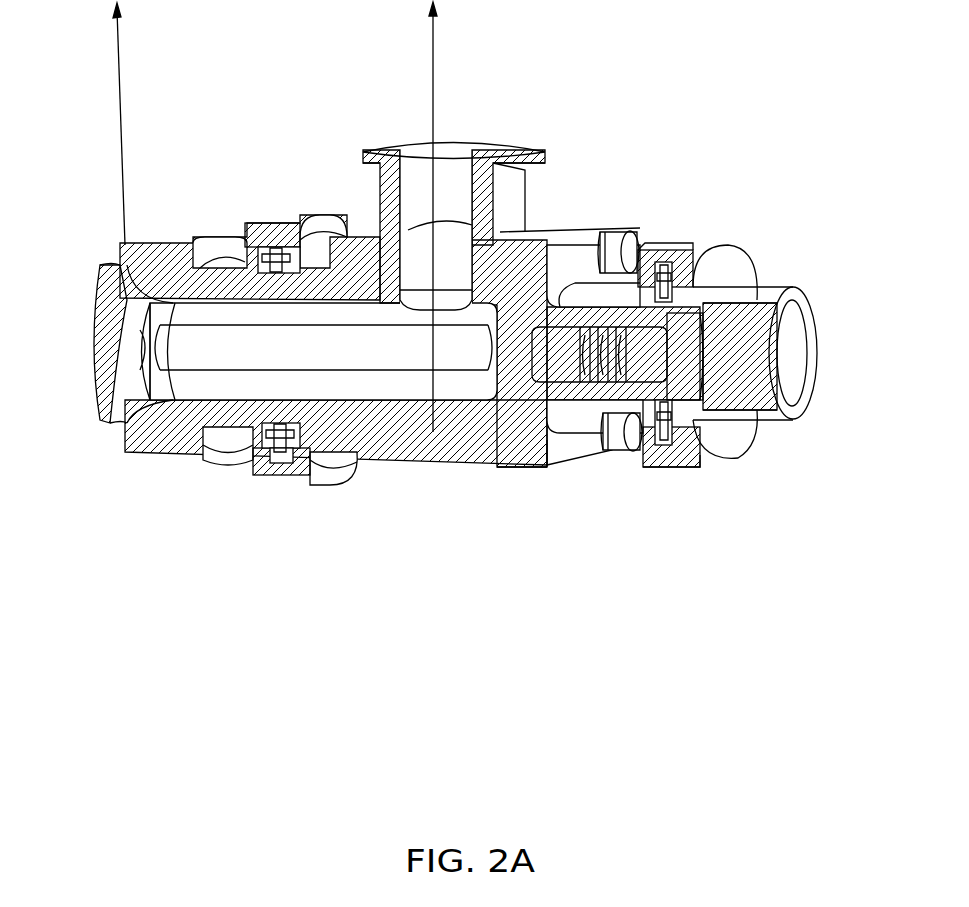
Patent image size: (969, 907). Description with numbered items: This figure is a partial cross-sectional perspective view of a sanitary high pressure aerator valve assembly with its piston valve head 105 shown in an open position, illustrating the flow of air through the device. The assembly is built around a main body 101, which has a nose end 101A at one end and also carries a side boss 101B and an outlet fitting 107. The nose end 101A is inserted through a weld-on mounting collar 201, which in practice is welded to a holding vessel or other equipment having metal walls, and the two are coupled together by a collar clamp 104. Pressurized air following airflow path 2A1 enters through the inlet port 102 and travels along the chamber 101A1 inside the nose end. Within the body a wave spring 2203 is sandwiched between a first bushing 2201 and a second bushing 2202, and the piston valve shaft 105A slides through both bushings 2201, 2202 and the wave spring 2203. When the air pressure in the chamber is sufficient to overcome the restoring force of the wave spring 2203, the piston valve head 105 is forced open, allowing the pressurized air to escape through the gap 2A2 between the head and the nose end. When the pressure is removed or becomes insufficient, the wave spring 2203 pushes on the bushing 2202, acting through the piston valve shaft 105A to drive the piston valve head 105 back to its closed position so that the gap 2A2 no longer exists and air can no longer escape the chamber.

The main body 101 is at (445, 447).
The nose end 101A is at (370, 226).
The chamber 101A1 is at (255, 386).
The side boss 101B is at (575, 233).
The inlet port 102 is at (541, 150).
The collar clamp 104 is at (290, 220).
The piston valve head 105 is at (100, 274).
The piston valve shaft 105A is at (498, 468).
The outlet fitting 107 is at (756, 292).
The weld-on mounting collar 201 is at (190, 237).
The bushing 2201 is at (566, 418).
The bushing 2202 is at (746, 416).
The wave spring 2203 is at (680, 442).
The airflow path 2A1 is at (436, 60).
The gap 2A2 is at (123, 405).